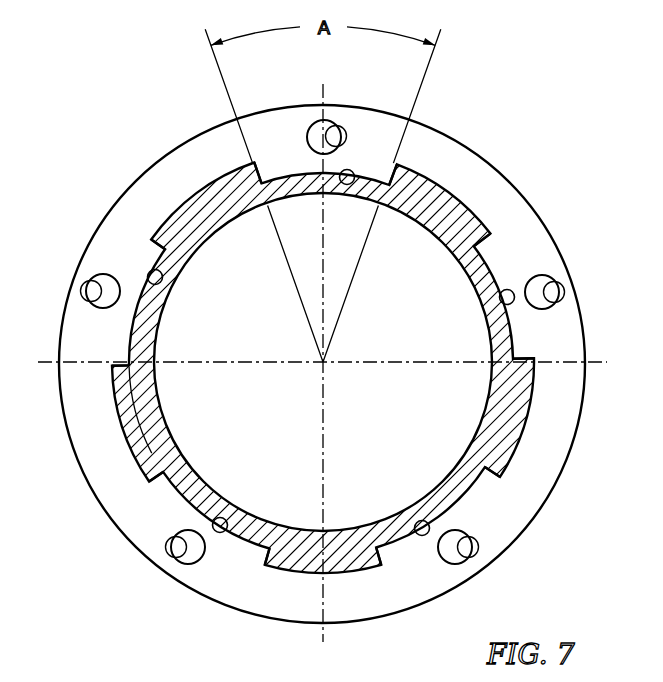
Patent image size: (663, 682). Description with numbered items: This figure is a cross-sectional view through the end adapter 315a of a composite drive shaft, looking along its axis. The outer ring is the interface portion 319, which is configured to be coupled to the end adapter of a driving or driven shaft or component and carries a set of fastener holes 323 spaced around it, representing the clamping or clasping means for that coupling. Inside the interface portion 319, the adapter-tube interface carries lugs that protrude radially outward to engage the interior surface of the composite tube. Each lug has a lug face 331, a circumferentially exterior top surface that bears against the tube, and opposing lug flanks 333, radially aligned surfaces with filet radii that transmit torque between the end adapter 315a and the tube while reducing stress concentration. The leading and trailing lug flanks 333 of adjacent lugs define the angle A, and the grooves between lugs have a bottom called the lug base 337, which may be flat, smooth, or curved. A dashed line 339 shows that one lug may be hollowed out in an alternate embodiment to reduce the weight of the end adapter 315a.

The end adapter 315a is at (101, 131).
The interface portion 319 is at (489, 166).
The fastener holes 323 is at (328, 132).
The lug face 331 is at (200, 192).
The lug flanks 333 is at (258, 175).
The lug base 337 is at (344, 188).
The dashed line 339 is at (126, 409).